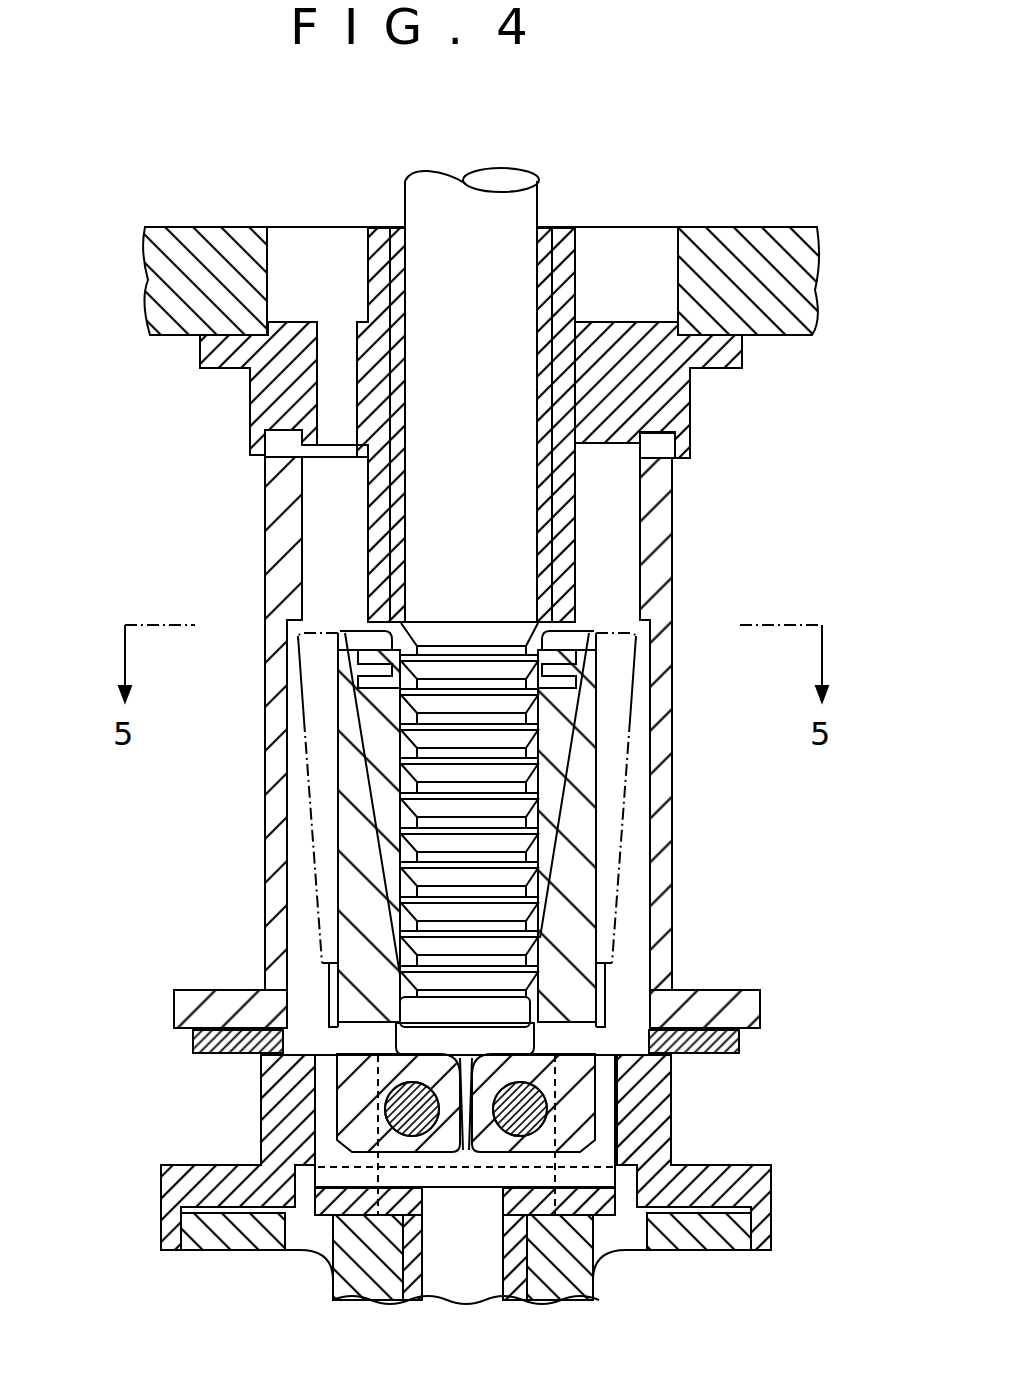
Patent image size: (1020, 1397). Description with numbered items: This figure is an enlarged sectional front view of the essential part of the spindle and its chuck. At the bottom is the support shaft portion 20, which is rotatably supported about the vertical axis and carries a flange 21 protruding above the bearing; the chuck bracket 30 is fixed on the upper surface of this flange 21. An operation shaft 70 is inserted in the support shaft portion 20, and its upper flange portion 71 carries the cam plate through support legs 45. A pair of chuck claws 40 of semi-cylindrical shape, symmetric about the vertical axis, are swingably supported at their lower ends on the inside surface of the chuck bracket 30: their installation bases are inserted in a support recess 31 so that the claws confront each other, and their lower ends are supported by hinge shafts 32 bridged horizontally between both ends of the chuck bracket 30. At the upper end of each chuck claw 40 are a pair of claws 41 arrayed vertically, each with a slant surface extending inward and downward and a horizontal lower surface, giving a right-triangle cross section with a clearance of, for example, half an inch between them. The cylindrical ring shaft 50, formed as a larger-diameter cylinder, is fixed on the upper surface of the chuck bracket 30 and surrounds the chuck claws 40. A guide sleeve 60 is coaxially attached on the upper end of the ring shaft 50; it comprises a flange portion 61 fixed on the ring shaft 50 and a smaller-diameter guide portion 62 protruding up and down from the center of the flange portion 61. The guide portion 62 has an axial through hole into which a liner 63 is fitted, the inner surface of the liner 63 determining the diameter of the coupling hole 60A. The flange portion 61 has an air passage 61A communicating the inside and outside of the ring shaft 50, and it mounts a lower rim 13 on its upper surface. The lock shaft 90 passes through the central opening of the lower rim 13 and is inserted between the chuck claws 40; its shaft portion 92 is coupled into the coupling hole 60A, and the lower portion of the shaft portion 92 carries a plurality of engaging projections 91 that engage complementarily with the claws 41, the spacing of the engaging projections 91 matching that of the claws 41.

The lower rim 13 is at (752, 226).
The support shaft portion 20 is at (340, 1306).
The flange 21 is at (211, 1250).
The chuck bracket 30 is at (672, 1102).
The support recess 31 is at (440, 1160).
The hinge shaft 32 is at (512, 1150).
The chuck claw 40 is at (338, 836).
The claw 41 is at (378, 682).
The support leg 45 is at (630, 1000).
The ring shaft 50 is at (680, 717).
The guide sleeve 60 is at (692, 425).
The coupling hole 60A is at (540, 594).
The flange portion 61 is at (690, 400).
The air passage 61A is at (320, 398).
The guide portion 62 is at (576, 539).
The liner 63 is at (548, 489).
The operation shaft 70 is at (413, 1283).
The upper flange portion 71 is at (318, 1238).
The lock shaft 90 is at (545, 196).
The engaging projection 91 is at (470, 700).
The shaft portion 92 is at (433, 285).